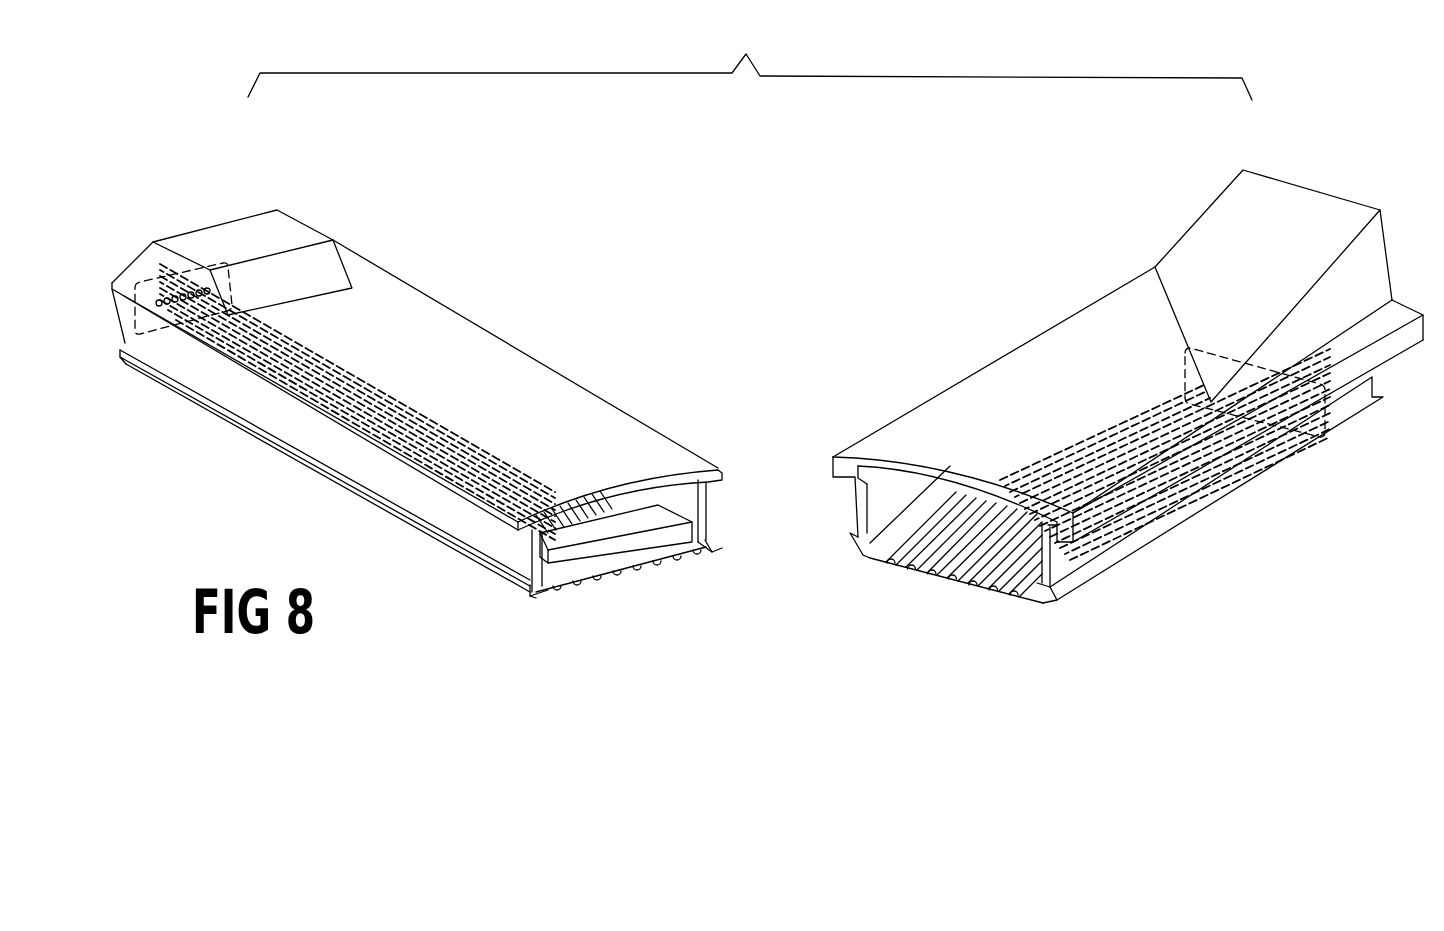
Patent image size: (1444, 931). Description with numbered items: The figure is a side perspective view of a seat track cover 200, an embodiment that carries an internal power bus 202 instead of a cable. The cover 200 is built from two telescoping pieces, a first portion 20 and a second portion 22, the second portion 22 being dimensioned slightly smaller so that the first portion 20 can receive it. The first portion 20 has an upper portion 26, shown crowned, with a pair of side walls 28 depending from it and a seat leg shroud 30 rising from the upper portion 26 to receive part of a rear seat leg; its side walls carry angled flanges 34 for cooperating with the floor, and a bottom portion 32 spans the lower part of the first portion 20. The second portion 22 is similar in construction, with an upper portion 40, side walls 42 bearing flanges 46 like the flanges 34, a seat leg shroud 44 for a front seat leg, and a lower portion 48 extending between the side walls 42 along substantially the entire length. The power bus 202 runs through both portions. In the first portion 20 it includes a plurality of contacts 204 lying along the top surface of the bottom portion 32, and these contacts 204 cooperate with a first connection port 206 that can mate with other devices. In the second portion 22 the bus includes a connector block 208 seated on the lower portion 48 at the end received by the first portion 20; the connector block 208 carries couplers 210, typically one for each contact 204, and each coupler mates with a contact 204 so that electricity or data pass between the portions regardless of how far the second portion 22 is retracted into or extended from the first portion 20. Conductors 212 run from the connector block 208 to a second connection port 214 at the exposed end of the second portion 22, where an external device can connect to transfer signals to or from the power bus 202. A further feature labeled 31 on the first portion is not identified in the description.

The seat track cover 200 is at (750, 60).
The second portion 22 is at (548, 347).
The upper portion 40 is at (590, 410).
The seat leg shroud 44 is at (300, 237).
The second connection port 214 is at (222, 305).
The conductors 212 is at (258, 380).
The side walls 42 is at (312, 448).
The flanges 46 is at (530, 598).
The connector block 208 is at (583, 540).
The lower portion 48 is at (597, 578).
The couplers 210 is at (600, 581).
The power bus 202 is at (650, 553).
The first portion 20 is at (1002, 326).
The upper portion 26 is at (942, 418).
The seat leg shroud 30 is at (1343, 220).
The first connection port 206 is at (1215, 350).
The contacts 204 is at (893, 568).
The side walls 28 is at (858, 500).
The lower lip of plug 31 is at (857, 538).
The bottom portion 32 is at (993, 593).
The flanges 34 is at (1045, 607).